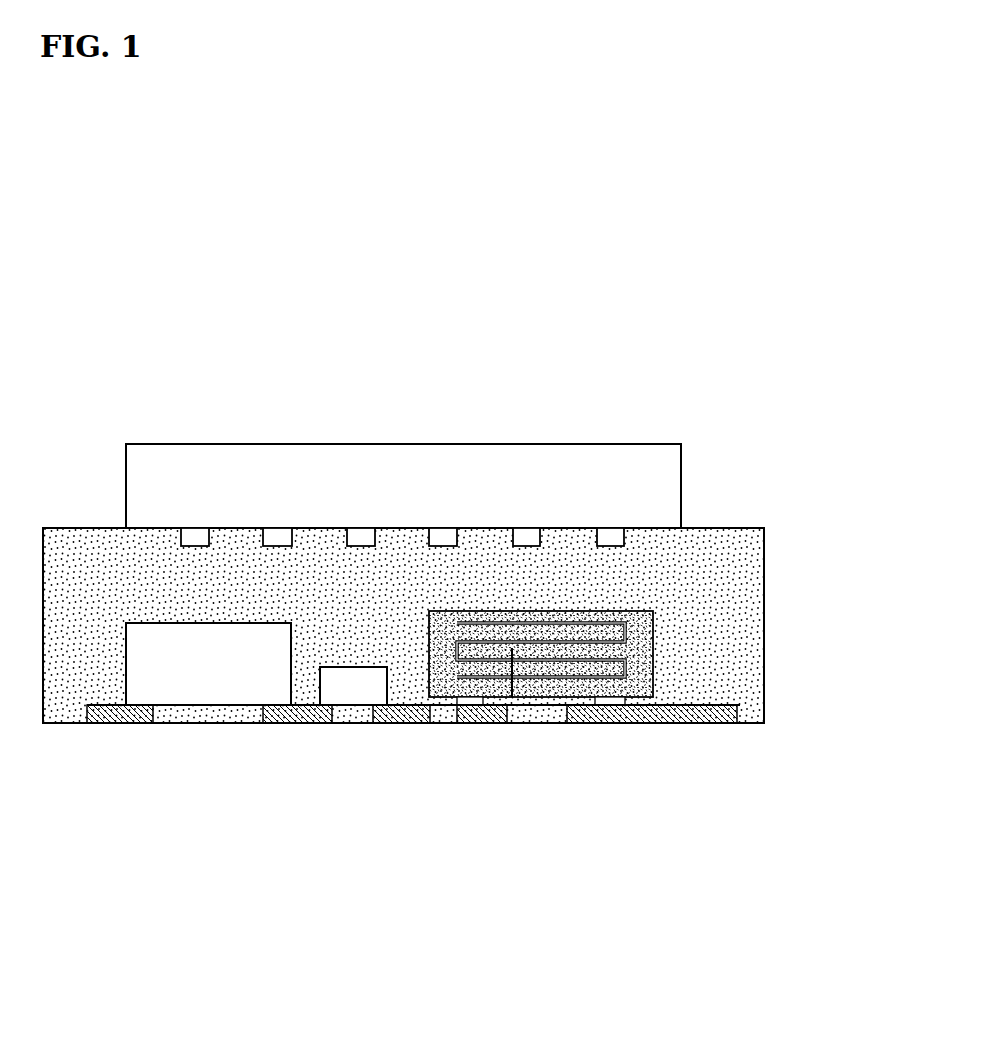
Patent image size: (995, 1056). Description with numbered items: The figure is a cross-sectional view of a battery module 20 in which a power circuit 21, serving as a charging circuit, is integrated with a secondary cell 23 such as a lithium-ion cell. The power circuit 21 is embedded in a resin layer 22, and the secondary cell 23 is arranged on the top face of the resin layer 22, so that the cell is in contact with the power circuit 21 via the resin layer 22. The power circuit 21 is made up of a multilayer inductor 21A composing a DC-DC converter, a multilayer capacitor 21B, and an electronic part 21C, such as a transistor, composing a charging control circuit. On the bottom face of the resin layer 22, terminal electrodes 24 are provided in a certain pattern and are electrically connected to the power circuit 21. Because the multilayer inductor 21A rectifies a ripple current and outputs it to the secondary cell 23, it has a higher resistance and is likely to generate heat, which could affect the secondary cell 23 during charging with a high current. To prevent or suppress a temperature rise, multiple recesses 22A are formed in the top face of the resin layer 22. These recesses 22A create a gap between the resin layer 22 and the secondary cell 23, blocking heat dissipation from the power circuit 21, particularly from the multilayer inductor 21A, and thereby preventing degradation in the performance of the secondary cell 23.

The battery module 20 is at (454, 528).
The power circuit 21 is at (389, 762).
The multilayer inductor 21A is at (541, 728).
The multilayer capacitor 21B is at (344, 683).
The electronic part 21C is at (236, 665).
The resin layer 22 is at (710, 607).
The recesses 22A is at (525, 543).
The secondary cell 23 is at (632, 480).
The terminal electrodes 24 is at (433, 705).